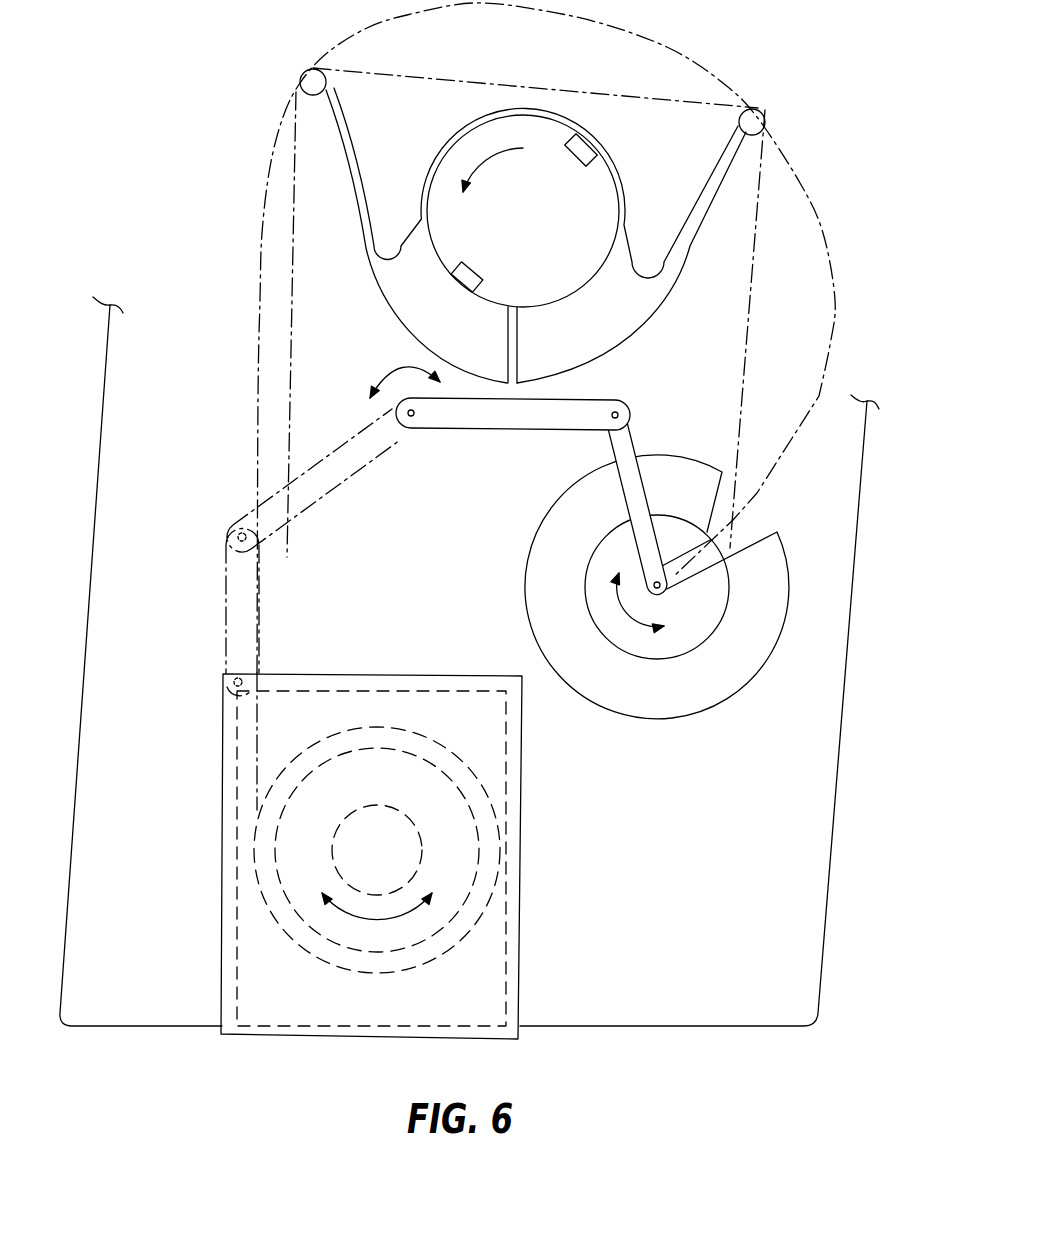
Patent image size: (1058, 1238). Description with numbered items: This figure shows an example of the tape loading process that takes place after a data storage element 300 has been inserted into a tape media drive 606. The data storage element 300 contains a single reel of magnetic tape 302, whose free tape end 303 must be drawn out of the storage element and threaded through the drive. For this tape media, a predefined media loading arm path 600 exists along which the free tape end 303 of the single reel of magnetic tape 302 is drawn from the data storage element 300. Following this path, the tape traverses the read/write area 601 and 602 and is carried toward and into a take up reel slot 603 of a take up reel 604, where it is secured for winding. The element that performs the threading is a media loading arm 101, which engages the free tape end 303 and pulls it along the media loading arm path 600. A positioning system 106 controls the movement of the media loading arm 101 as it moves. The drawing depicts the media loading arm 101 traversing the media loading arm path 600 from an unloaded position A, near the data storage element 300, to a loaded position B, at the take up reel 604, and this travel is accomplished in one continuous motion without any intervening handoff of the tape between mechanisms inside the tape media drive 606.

The media loading arm 101 is at (533, 428).
The positioning system 106 is at (409, 430).
The data storage element 300 is at (520, 957).
The single reel of magnetic tape 302 is at (317, 812).
The free tape end 303 is at (258, 729).
The media loading arm path 600 is at (836, 268).
The read/write area 601 is at (568, 152).
The read/write area 602 is at (478, 277).
The take up reel slot 603 is at (698, 567).
The take up reel 604 is at (713, 707).
The tape media drive 606 is at (827, 903).
The unloaded position A is at (226, 582).
The loaded position B is at (641, 433).